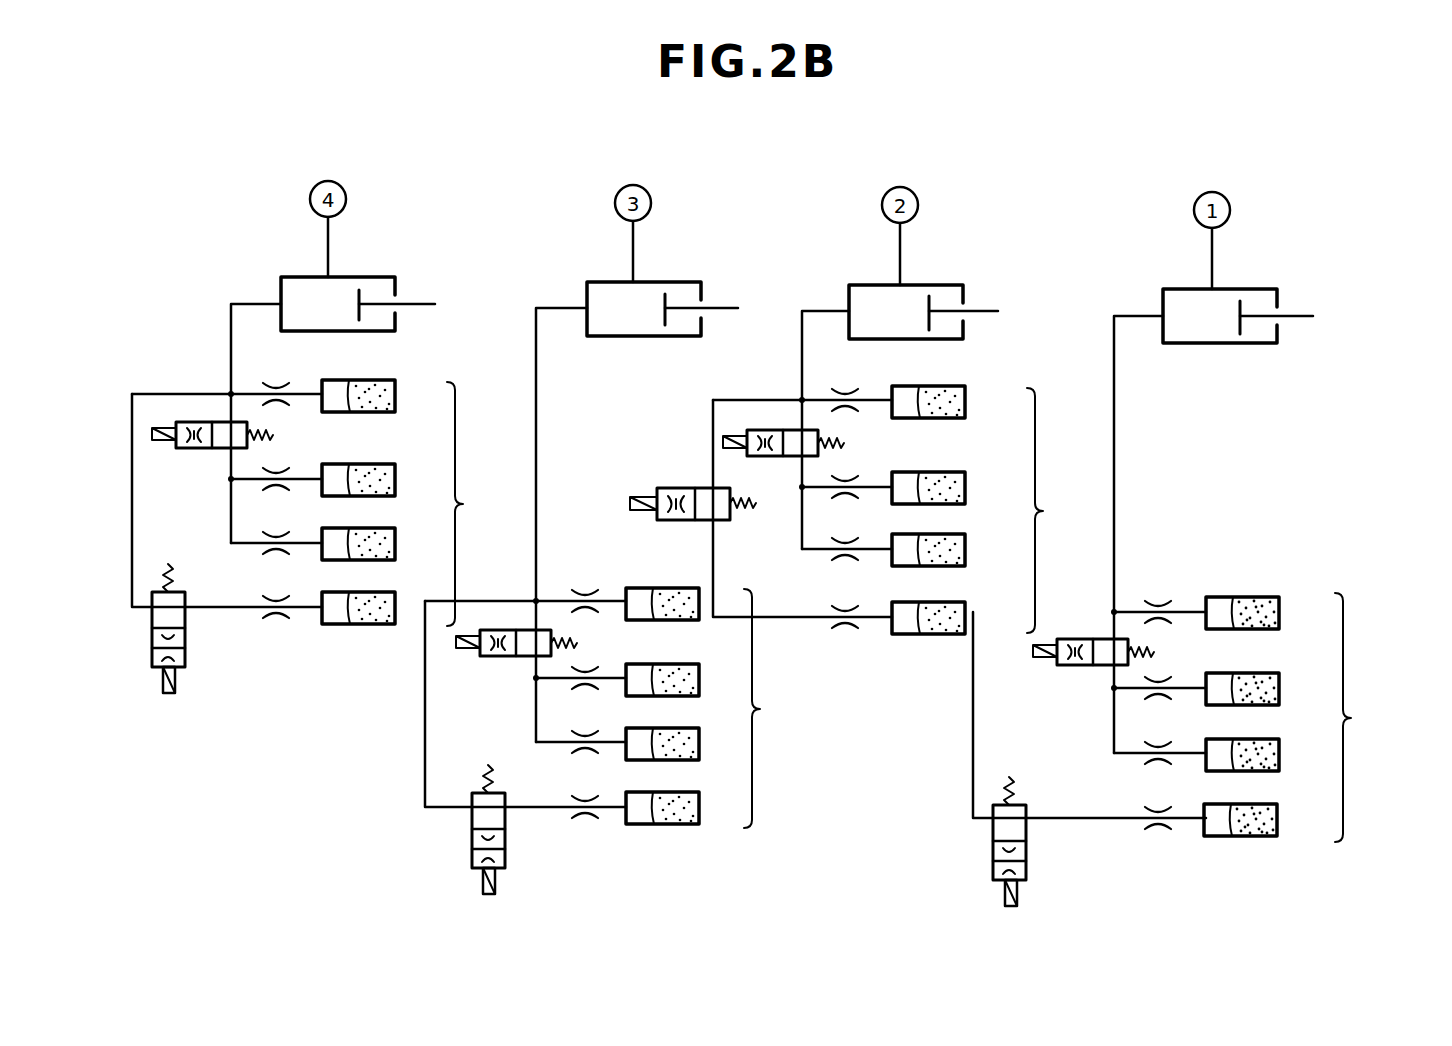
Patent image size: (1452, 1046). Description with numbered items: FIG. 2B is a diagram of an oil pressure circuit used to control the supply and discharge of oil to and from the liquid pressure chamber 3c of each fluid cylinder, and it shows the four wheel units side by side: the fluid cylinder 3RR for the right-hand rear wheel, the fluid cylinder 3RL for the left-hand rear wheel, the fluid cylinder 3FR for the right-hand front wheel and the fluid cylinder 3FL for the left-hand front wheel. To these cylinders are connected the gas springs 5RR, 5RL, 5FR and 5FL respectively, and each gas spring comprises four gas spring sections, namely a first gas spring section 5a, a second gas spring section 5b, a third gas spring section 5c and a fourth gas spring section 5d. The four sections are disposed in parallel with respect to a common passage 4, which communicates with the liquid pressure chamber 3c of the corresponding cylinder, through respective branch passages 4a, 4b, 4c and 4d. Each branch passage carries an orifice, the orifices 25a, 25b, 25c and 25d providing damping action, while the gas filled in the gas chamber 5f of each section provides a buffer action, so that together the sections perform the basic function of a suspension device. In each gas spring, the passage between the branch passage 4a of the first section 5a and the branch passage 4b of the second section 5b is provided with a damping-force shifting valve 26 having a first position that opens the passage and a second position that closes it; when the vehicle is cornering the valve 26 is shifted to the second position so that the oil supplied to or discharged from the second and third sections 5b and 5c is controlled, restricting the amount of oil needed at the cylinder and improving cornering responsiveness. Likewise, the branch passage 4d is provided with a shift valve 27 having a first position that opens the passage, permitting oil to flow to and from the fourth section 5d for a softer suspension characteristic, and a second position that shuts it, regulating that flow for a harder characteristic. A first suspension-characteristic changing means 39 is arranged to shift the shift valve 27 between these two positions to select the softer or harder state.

The common passage 4 is at (670, 518).
The branch passage 4a is at (1120, 614).
The branch passage 4b is at (1125, 690).
The branch passage 4c is at (1125, 755).
The branch passage 4d is at (653, 636).
The fluid cylinder 3RR is at (390, 272).
The fluid cylinder 3RL is at (690, 272).
The fluid cylinder 3FR is at (955, 278).
The fluid cylinder 3FL is at (1265, 280).
The liquid pressure chamber 3c is at (825, 348).
The damping-force shifting valve 26 is at (630, 535).
The shift valve 27 is at (589, 697).
The orifice 25a is at (726, 503).
The orifice 25b is at (723, 583).
The orifice 25c is at (722, 656).
The orifice 25d is at (724, 736).
The first gas spring section 5a is at (828, 519).
The second gas spring section 5b is at (825, 578).
The third gas spring section 5c is at (821, 651).
The fourth gas spring section 5d is at (823, 704).
The gas chamber 5f is at (1244, 694).
The gas spring 5RR is at (482, 504).
The gas spring 5RL is at (779, 708).
The gas spring 5FR is at (1060, 510).
The gas spring 5FL is at (1366, 717).
The first suspension-characteristic changing means 39 is at (180, 705).